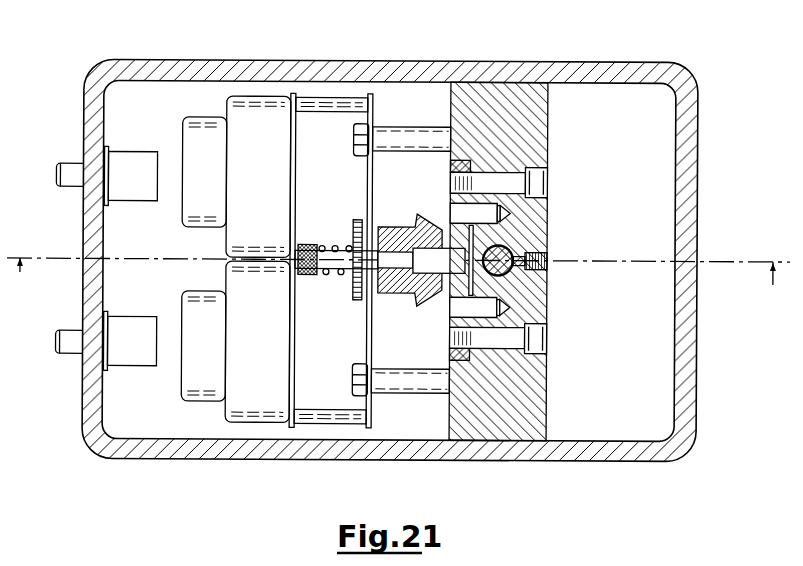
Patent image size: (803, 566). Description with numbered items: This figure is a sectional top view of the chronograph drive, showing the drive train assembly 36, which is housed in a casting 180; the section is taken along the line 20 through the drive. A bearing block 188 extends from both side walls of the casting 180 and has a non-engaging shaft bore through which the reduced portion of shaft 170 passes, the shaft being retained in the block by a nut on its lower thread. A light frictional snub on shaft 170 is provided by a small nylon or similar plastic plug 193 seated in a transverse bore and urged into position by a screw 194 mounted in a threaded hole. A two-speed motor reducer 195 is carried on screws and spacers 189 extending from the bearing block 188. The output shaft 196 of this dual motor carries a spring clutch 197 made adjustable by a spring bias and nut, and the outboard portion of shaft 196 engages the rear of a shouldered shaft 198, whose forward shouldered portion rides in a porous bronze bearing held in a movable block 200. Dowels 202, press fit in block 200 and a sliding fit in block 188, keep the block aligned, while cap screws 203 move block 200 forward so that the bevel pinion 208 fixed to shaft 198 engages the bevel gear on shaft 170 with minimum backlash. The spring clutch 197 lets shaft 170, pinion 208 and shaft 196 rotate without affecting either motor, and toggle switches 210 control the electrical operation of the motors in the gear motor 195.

The section line 20 is at (398, 284).
The chronograph drive train assembly and housing 36 is at (580, 42).
The shaft 170 is at (511, 252).
The casting 180 is at (690, 383).
The bearing block 188 is at (543, 391).
The screws and spacers 189 is at (402, 128).
The plug 193 is at (520, 269).
The screw 194 is at (546, 268).
The two-speed motor reducer 195 is at (198, 242).
The output shaft 196 is at (325, 249).
The spring clutch 197 is at (342, 282).
The shouldered shaft 198 is at (433, 273).
The movable block 200 is at (453, 166).
The dowels 202 is at (450, 209).
The cap screws 203 is at (540, 183).
The bevel pinion 208 is at (378, 290).
The toggle switches 210 is at (119, 153).